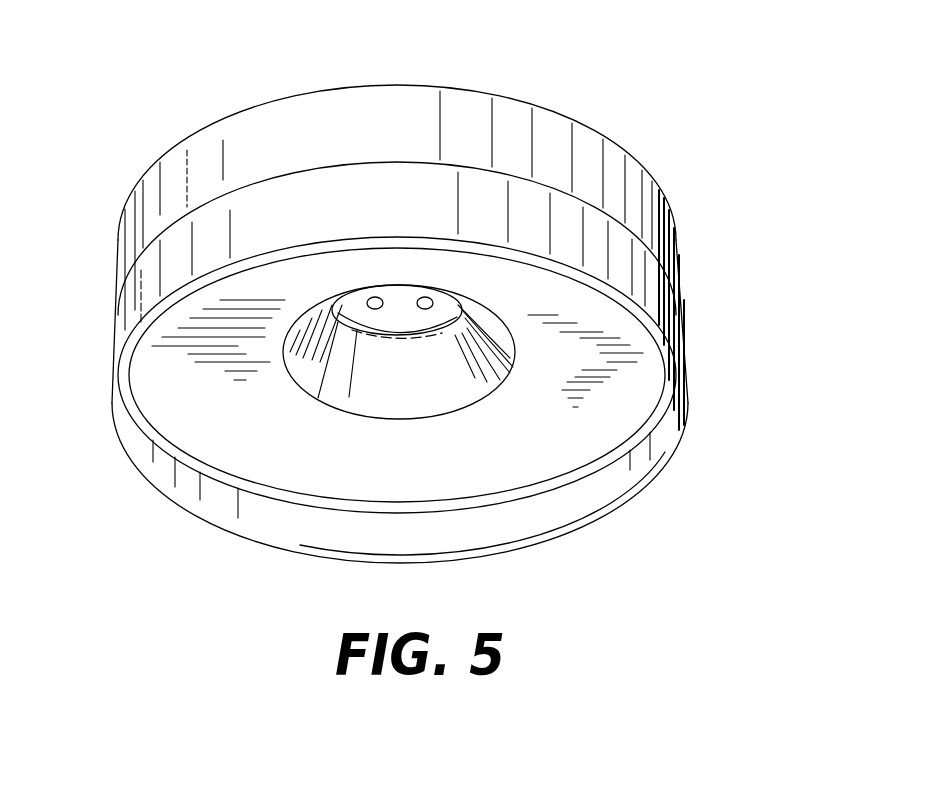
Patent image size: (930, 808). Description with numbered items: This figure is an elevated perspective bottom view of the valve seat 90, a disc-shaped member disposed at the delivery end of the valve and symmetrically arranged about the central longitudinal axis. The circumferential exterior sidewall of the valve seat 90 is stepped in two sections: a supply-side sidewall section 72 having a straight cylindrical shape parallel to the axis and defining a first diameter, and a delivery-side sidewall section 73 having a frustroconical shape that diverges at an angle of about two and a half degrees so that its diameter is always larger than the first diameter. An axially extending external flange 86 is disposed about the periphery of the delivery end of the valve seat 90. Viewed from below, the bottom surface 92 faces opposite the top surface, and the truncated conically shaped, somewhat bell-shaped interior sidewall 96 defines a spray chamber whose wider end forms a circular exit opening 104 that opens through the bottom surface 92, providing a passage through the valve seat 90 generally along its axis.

The valve seat 90 is at (416, 318).
The sidewall section 72 is at (300, 122).
The sidewall section 73 is at (188, 252).
The bottom surface 92 is at (613, 401).
The external flange 86 is at (542, 512).
The conically shaped sidewall 96 is at (368, 380).
The exit opening 104 is at (458, 413).